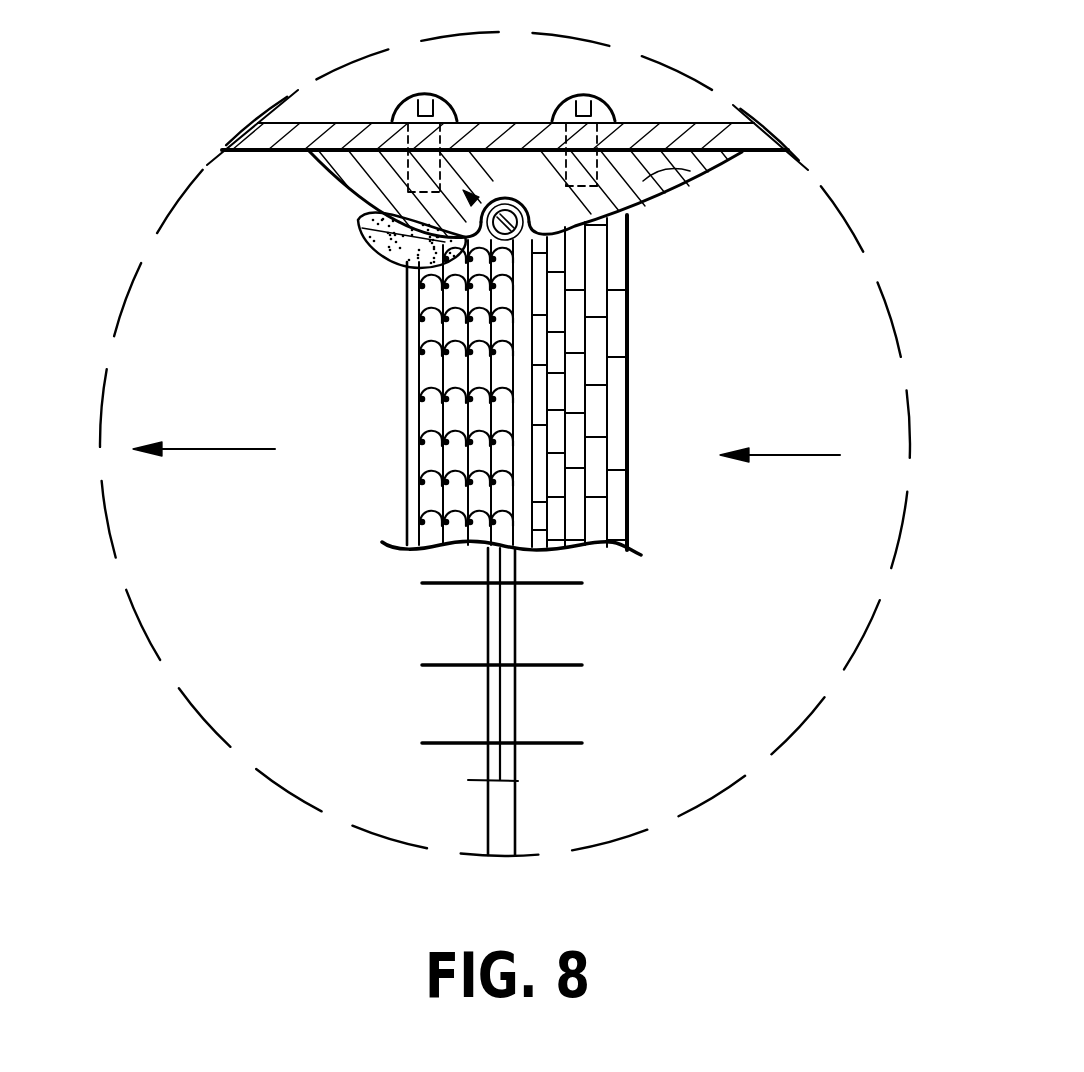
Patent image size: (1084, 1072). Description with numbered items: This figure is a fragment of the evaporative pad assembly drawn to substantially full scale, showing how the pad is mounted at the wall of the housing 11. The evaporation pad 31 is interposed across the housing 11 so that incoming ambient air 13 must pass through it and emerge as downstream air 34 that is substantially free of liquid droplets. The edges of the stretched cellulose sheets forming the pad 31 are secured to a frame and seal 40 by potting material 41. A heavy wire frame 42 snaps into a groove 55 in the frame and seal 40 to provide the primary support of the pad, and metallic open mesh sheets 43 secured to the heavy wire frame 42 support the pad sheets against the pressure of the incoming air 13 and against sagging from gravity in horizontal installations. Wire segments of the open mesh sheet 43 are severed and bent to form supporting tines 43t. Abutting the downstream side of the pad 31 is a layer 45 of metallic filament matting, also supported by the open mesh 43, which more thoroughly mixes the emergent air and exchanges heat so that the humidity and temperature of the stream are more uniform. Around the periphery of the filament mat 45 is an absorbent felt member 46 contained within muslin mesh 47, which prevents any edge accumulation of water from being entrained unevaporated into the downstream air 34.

The housing 11 is at (308, 132).
The ambient air 13 is at (817, 455).
The evaporation pad 31 is at (578, 357).
The downstream air 34 is at (237, 449).
The frame and seal 40 is at (645, 180).
The potting material 41 is at (640, 222).
The heavy wire frame 42 is at (505, 197).
The metallic open mesh sheet 43 is at (503, 624).
The supporting tines 43t is at (560, 667).
The downstream layer of metallic filament matting 45 is at (405, 435).
The peripheral absorbent felt member 46 is at (407, 262).
The muslin mesh 47 is at (360, 227).
The groove 55 is at (383, 174).